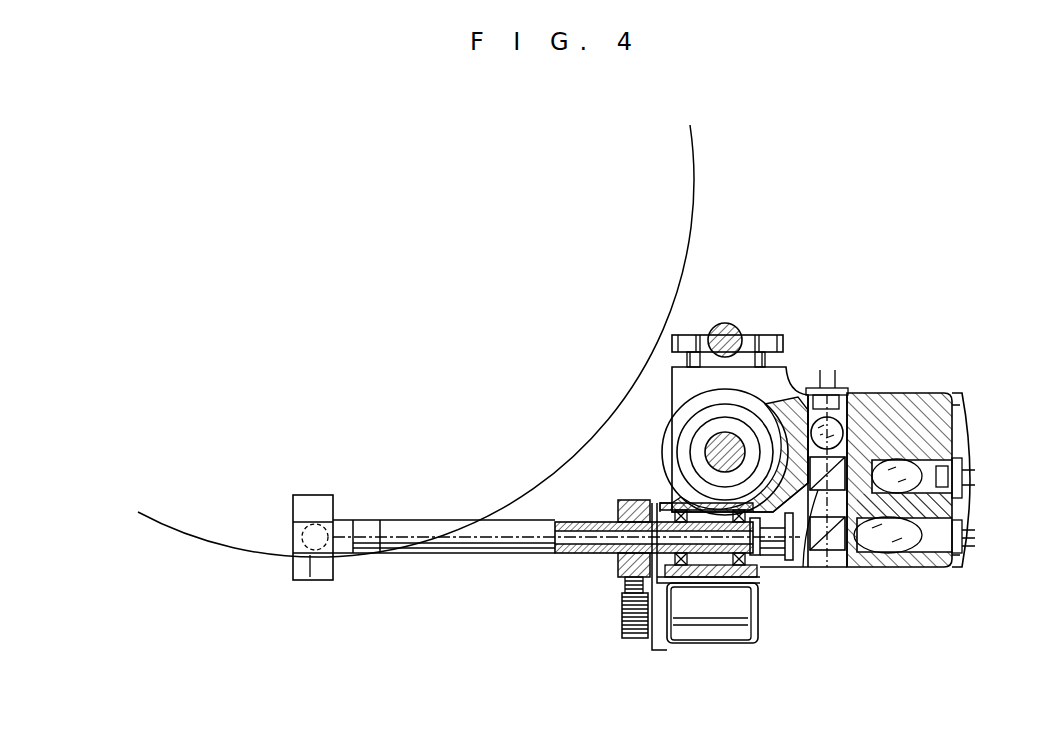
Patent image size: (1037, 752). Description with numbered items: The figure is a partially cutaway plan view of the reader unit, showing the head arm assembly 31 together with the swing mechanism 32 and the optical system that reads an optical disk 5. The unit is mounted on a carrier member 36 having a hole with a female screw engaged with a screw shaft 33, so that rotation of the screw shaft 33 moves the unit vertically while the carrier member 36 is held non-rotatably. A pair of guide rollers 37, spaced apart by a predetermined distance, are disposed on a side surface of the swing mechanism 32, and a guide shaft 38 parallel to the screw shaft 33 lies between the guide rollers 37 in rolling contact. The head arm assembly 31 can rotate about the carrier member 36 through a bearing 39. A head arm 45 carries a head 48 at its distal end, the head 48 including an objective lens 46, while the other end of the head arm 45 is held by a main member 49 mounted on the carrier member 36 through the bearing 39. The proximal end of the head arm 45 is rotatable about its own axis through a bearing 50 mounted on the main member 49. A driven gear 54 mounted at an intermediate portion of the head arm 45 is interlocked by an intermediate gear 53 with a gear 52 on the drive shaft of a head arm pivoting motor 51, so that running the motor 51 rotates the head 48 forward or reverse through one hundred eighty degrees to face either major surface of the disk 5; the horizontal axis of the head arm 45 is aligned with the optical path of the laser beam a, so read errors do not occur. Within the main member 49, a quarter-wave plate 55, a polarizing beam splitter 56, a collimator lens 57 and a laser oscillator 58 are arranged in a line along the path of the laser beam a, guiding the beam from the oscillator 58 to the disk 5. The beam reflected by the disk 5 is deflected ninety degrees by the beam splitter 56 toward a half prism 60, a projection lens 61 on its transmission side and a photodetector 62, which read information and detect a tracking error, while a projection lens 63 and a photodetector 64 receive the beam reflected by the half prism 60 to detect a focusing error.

The disk 5 is at (698, 190).
The head arm assembly 31 is at (955, 400).
The swing mechanism 32 is at (819, 361).
The screw shaft 33 is at (706, 460).
The carrier member 36 is at (700, 445).
The guide rollers 37 is at (685, 340).
The guide shaft 38 is at (726, 326).
The bearing 39 is at (695, 428).
The head arm 45 is at (470, 545).
The objective lens 46 is at (322, 545).
The head 48 is at (300, 575).
The main member 49 is at (915, 395).
The bearing 50 is at (690, 568).
The head arm pivoting motor 51 is at (720, 643).
The gear 52 is at (622, 625).
The intermediate gear 53 is at (625, 585).
The driven gear 54 is at (622, 565).
The λ/4 plate 55 is at (788, 560).
The polarizing beam splitter 56 is at (845, 560).
The collimator lens 57 is at (905, 553).
The laser oscillator 58 is at (968, 541).
The half prism 60 is at (808, 565).
The projection lens 61 is at (840, 432).
The photodetector 62 is at (840, 386).
The projection lens 63 is at (962, 497).
The photodetector 64 is at (948, 466).
The laser beam a is at (590, 528).